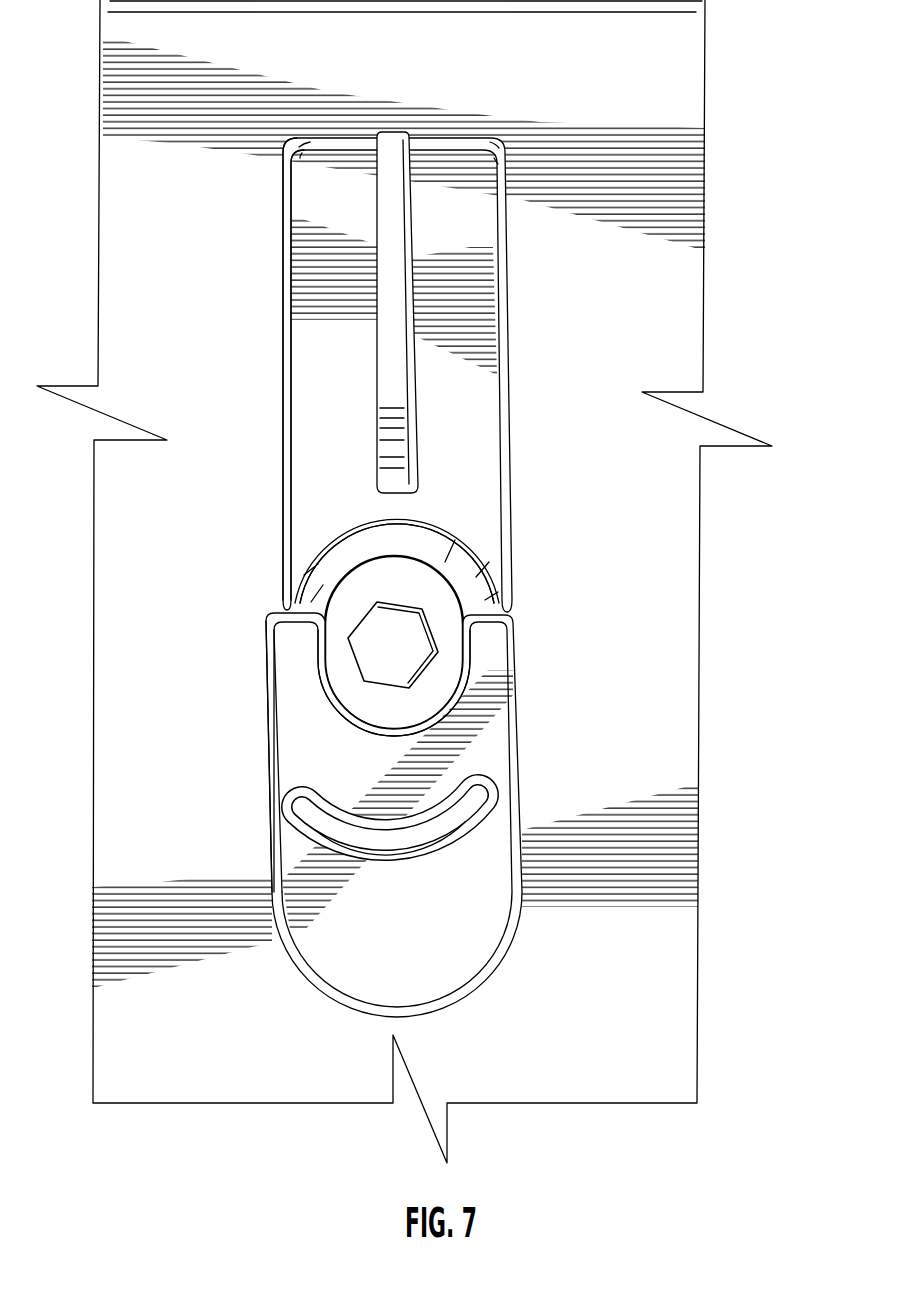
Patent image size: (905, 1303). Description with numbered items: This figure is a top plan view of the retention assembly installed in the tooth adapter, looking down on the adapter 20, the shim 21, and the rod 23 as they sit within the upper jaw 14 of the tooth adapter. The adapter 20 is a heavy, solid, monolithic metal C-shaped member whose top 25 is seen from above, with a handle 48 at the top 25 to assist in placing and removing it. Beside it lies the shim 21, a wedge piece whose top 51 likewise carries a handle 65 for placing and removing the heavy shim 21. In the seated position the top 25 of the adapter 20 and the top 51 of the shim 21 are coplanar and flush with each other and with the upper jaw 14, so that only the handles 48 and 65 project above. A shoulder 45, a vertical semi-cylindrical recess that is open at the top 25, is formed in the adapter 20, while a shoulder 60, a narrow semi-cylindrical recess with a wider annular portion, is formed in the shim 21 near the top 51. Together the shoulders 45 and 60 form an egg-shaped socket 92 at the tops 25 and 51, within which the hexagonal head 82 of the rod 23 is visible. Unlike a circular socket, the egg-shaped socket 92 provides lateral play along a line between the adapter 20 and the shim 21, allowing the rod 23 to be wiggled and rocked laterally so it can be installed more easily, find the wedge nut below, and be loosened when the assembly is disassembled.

The upper jaw 14 is at (668, 334).
The C-shaped adapter 20 is at (518, 476).
The shim 21 is at (521, 738).
The rod 23 is at (458, 588).
The top 25 is at (308, 343).
The shoulder 45 is at (337, 557).
The handle 48 is at (413, 414).
The top 51 is at (290, 756).
The shoulder 60 is at (336, 672).
The handle 65 is at (494, 810).
The head 82 is at (412, 681).
The egg-shaped socket 92 is at (408, 586).